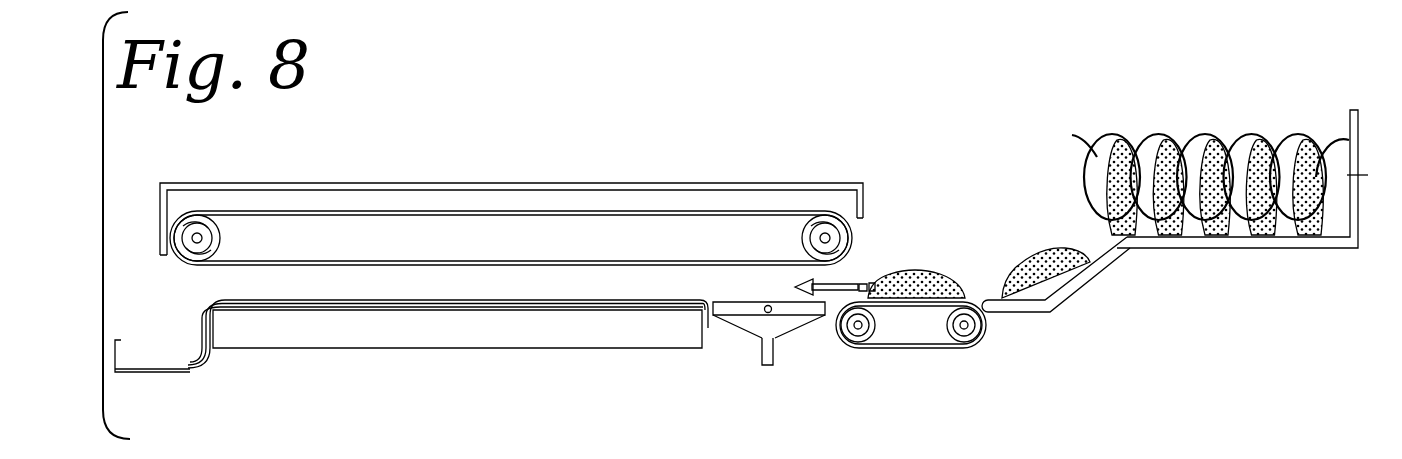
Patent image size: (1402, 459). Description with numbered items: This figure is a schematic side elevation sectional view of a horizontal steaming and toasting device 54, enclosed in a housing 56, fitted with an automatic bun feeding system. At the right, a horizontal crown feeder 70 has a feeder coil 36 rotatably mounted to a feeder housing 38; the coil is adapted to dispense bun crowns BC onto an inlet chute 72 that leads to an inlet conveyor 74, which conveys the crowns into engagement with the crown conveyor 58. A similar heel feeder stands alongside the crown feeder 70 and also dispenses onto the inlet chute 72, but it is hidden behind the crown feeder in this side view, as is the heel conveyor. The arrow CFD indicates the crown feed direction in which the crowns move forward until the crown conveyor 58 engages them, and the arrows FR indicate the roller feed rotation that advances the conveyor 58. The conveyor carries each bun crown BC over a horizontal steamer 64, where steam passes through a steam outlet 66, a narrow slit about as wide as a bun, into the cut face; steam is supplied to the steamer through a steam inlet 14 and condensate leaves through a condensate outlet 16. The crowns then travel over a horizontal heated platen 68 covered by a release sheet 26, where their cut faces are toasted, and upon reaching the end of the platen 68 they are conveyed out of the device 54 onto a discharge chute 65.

The horizontal steaming and toasting device 54 is at (460, 157).
The housing 56 is at (258, 183).
The crown conveyor 58 is at (770, 212).
The roller feed rotation FR is at (190, 215).
The crown feed direction CFD is at (840, 282).
The bun crown BC is at (1107, 172).
The feeder coil 36 is at (1262, 138).
The feeder housing 38 is at (1317, 249).
The horizontal crown feeder 70 is at (1182, 289).
The inlet chute 72 is at (1068, 297).
The inlet conveyor 74 is at (942, 348).
The steam inlet 14 is at (770, 313).
The condensate outlet 16 is at (776, 352).
The horizontal steamer 64 is at (757, 330).
The steam outlet 66 is at (771, 306).
The release sheet 26 is at (486, 302).
The horizontal heated platen 68 is at (345, 328).
The discharge chute 65 is at (150, 368).